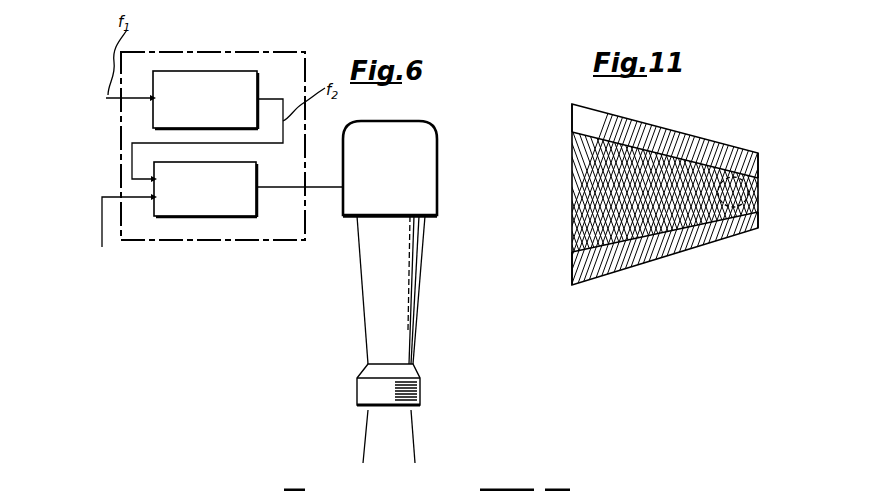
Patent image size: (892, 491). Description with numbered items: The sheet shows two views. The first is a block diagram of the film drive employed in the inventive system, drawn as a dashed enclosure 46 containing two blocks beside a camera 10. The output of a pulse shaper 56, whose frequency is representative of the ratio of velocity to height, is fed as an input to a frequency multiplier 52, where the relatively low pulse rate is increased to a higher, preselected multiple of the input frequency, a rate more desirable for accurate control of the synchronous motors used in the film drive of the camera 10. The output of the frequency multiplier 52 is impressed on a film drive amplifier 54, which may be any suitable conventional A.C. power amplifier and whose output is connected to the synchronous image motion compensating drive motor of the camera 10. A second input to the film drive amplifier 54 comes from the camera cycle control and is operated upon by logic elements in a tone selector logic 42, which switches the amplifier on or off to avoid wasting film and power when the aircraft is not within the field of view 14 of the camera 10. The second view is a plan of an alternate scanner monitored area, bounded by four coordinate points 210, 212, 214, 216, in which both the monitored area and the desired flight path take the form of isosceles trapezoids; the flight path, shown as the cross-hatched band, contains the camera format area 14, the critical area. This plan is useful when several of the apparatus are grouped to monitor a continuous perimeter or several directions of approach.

In FIG. 6, the camera 10 is at (367, 290).
In FIG. 6, the film drive circuit 46 is at (296, 52).
In FIG. 6, the frequency multiplier 52 is at (243, 71).
In FIG. 6, the film drive amplifier 54 is at (234, 217).
In FIG. 6, the pulse shaper 56 is at (97, 91).
In FIG. 6, the tone selector logic 42 is at (108, 246).
In FIG. 11, the field of view 14 is at (746, 192).
In FIG. 11, the coordinate point 210 is at (572, 104).
In FIG. 11, the coordinate point 212 is at (572, 285).
In FIG. 11, the coordinate point 214 is at (758, 228).
In FIG. 11, the coordinate point 216 is at (758, 153).